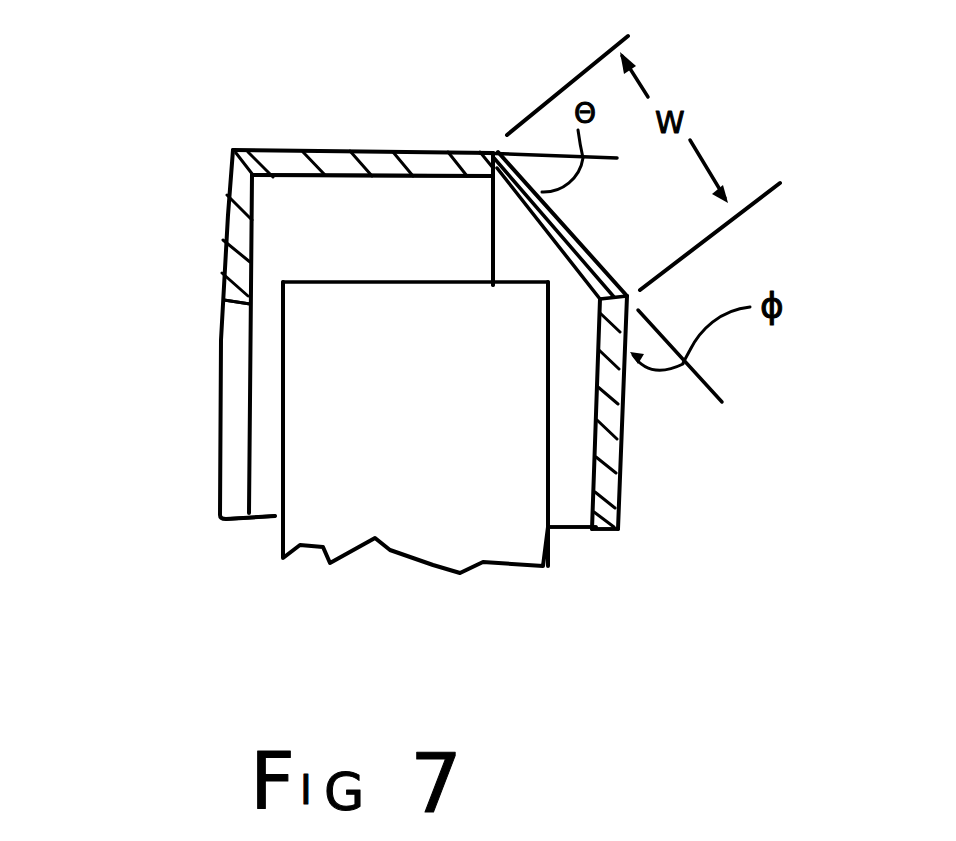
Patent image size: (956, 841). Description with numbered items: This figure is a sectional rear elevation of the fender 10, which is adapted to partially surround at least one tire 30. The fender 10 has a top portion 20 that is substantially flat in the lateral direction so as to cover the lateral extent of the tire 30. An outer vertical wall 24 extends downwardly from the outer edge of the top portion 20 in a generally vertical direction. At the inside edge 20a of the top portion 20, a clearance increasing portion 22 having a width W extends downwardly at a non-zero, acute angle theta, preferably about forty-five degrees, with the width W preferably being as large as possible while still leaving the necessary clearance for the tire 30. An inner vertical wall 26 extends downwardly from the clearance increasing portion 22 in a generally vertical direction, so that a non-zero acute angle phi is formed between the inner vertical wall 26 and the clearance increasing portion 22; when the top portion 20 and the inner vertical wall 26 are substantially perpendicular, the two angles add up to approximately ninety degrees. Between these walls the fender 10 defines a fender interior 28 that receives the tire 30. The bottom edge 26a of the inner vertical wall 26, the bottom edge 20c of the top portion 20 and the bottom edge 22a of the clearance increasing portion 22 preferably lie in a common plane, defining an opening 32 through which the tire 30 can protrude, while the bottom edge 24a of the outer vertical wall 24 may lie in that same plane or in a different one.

The fender 10 is at (172, 145).
The top portion 20 is at (371, 152).
The inside edge 20a is at (494, 153).
The bottom edge 20c is at (267, 520).
The clearance increasing portion 22 is at (567, 230).
The bottom edge 22a is at (608, 535).
The outer vertical wall 24 is at (223, 227).
The bottom edge 24a is at (225, 313).
The inner vertical wall 26 is at (610, 408).
The bottom edge 26a is at (590, 533).
The fender interior 28 is at (366, 262).
The tire 30 is at (513, 530).
The opening 32 is at (568, 515).